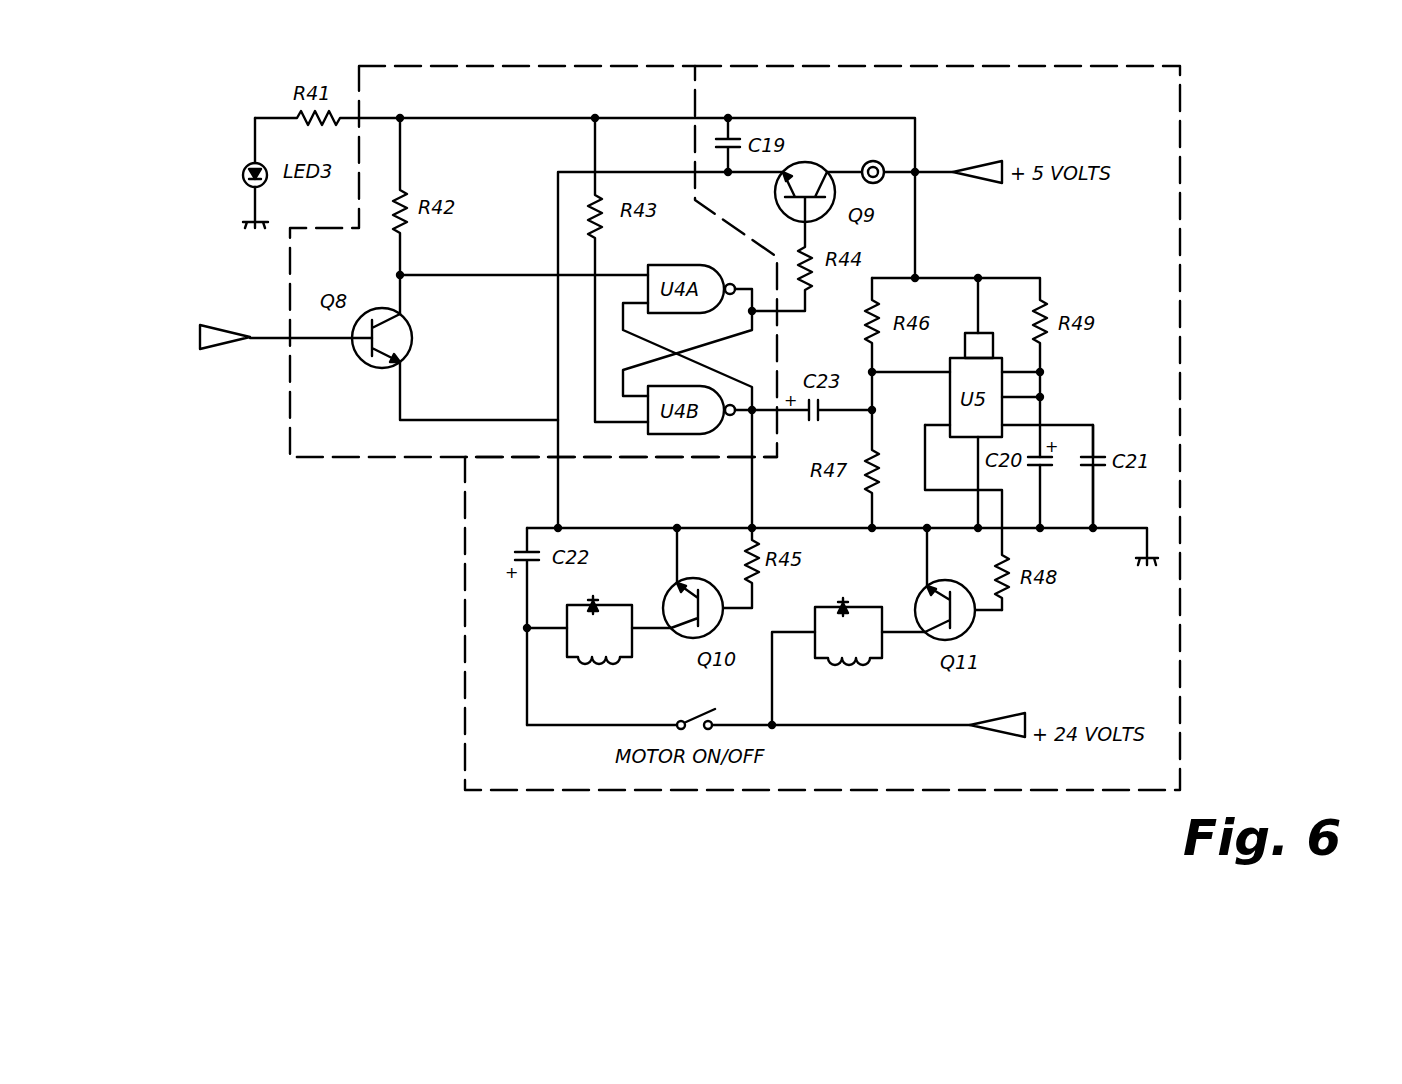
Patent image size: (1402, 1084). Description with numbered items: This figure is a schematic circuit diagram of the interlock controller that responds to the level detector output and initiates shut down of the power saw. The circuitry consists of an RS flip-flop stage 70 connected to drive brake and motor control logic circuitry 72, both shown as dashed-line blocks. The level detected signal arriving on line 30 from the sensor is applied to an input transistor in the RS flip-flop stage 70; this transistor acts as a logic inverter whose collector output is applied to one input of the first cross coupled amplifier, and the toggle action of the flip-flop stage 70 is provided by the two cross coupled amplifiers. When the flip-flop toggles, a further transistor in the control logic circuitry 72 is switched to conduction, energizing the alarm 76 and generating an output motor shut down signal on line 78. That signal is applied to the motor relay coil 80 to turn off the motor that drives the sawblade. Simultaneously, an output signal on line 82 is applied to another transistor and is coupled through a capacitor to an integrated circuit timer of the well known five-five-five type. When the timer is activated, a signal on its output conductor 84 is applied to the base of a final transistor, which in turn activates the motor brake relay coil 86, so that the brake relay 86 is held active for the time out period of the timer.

The output 30 is at (272, 338).
The RS flip-flop stage 70 is at (477, 66).
The brake and motor control logic circuitry 72 is at (885, 68).
The alarm 76 is at (878, 183).
The line 78 is at (558, 246).
The motor relay coil 80 is at (605, 668).
The line 82 is at (752, 487).
The output conductor 84 is at (960, 492).
The motor brake relay coil 86 is at (857, 670).